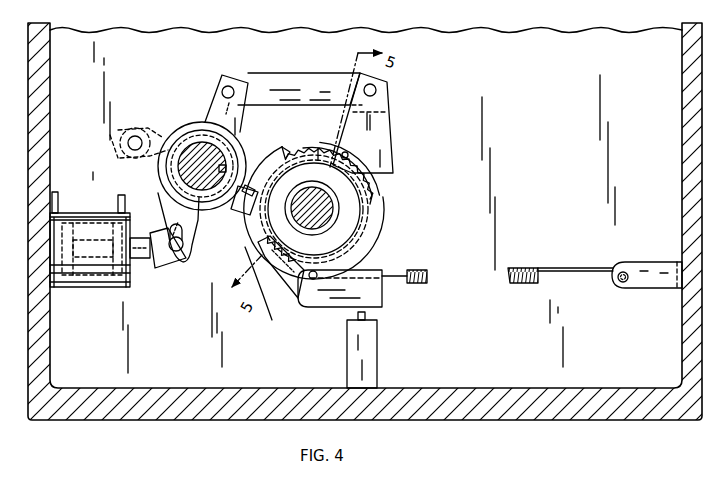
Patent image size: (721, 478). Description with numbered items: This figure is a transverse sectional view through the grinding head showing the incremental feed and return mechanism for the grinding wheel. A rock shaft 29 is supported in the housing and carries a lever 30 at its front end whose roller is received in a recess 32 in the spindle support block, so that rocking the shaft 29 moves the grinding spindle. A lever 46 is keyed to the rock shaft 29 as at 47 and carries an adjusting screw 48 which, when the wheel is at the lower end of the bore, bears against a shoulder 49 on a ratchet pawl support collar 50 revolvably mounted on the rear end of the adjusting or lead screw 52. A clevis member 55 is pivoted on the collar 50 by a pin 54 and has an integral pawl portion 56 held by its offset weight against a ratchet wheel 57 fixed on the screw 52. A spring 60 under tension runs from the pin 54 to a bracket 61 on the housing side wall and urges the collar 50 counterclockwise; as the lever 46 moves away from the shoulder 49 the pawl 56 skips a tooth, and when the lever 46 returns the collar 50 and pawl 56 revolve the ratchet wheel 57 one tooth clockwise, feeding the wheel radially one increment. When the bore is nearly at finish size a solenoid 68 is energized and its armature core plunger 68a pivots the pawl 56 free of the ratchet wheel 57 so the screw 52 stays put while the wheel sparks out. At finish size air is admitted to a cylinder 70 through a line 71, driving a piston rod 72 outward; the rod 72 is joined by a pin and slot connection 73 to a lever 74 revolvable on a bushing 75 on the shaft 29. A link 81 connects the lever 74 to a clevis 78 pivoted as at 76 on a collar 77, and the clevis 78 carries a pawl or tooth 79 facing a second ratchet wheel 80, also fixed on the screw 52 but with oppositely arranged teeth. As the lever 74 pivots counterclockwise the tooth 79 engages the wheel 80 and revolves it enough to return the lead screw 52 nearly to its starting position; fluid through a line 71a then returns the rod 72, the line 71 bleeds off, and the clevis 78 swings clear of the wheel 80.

The rock shaft 29 is at (197, 150).
The lever 30 is at (157, 130).
The recess 32 is at (122, 128).
The lever 46 is at (230, 210).
The key 47 is at (227, 166).
The adjusting screw 48 is at (240, 214).
The shoulder 49 is at (262, 165).
The ratchet pawl support collar 50 is at (373, 237).
The adjusting or lead screw 52 is at (332, 222).
The pin 54 is at (288, 292).
The clevis member 55 is at (332, 295).
The pawl portion 56 is at (259, 295).
The ratchet wheel 57 is at (267, 246).
The spring 60 is at (532, 268).
The bracket 61 is at (652, 275).
The solenoid 68 is at (372, 352).
The armature core plunger 68a is at (365, 316).
The cylinder 70 is at (81, 284).
The line 71 is at (56, 195).
The line 71a is at (132, 191).
The piston rod 72 is at (102, 247).
The pin and slot connection 73 is at (184, 266).
The lever 74 is at (211, 112).
The bushing 75 is at (150, 132).
The pivot 76 is at (348, 154).
The collar 77 is at (370, 204).
The clevis 78 is at (378, 122).
The pawl or tooth 79 is at (333, 162).
The second ratchet wheel 80 is at (378, 192).
The link 81 is at (264, 84).